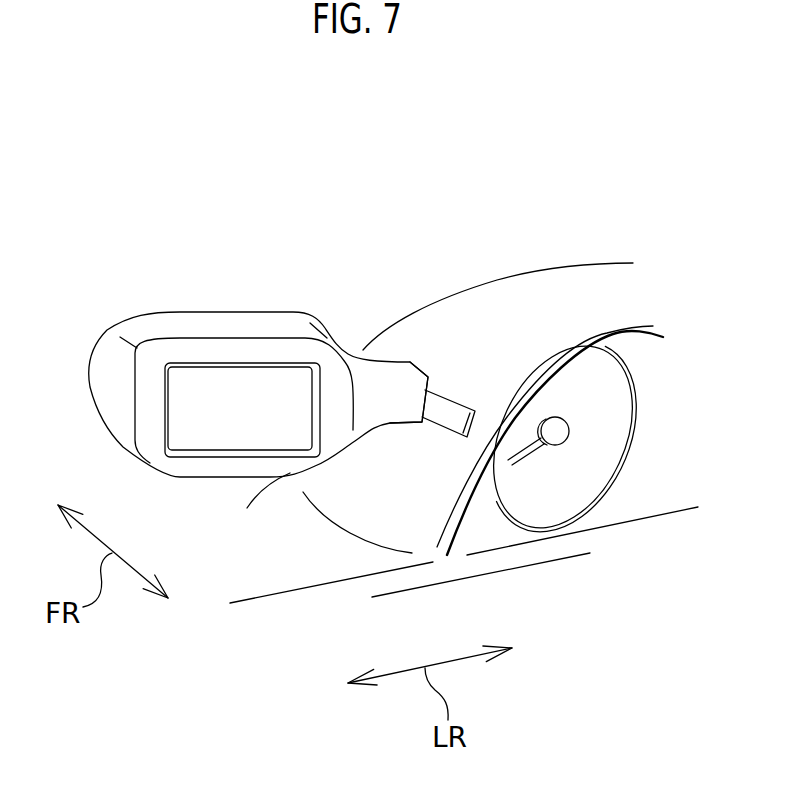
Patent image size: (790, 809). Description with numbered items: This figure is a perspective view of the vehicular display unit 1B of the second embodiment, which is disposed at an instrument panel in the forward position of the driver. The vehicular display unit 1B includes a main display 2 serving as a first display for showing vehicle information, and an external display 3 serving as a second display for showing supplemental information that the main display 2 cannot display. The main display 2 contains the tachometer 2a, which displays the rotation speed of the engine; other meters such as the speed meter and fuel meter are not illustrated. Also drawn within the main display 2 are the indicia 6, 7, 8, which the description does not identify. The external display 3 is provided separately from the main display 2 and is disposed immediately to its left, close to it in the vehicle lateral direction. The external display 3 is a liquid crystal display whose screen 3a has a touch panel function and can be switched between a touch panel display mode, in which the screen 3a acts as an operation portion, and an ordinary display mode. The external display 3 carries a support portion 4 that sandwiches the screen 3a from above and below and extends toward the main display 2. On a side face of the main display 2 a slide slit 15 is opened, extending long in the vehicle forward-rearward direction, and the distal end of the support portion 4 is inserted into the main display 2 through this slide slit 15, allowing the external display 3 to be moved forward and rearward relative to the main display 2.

The vehicular display unit 1B is at (342, 245).
The main display 2 is at (634, 487).
The tachometer 2a is at (570, 492).
The external display 3 is at (157, 298).
The screen 3a is at (245, 383).
The support portion 4 is at (393, 393).
The slide slit 15 is at (453, 405).
The detection device 6 is at (587, 382).
The detection device 7 is at (592, 415).
The detection device 8 is at (582, 453).